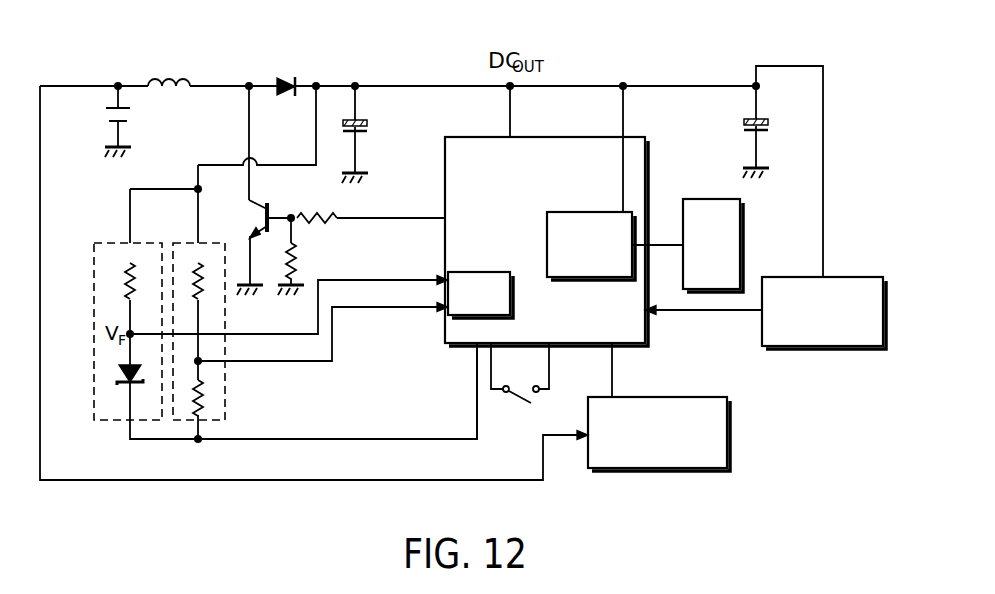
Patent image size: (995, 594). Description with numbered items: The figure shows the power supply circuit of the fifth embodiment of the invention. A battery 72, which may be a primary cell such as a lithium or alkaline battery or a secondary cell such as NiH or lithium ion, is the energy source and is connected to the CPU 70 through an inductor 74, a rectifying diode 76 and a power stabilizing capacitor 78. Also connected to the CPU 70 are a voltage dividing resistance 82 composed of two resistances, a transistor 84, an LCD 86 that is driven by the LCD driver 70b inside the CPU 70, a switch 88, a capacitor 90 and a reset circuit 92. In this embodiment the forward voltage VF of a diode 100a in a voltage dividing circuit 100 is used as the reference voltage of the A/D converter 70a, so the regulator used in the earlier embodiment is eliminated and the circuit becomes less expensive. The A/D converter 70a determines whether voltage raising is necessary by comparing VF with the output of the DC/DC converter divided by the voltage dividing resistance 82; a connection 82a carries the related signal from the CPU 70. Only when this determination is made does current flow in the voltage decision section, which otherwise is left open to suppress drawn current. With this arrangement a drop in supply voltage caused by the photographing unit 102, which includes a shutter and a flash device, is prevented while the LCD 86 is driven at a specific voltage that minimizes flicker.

The CPU 70 is at (445, 167).
The A/D converter 70a is at (513, 305).
The LCD driver 70b is at (574, 212).
The battery 72 is at (102, 120).
The inductor 74 is at (192, 76).
The rectifying diode 76 is at (285, 75).
The power stabilizing capacitor 78 is at (372, 124).
The voltage dividing resistance 82 is at (225, 390).
The detection signal line 82a is at (475, 346).
The transistor 84 is at (270, 196).
The LCD 86 is at (743, 236).
The switch 88 is at (514, 405).
The capacitor 90 is at (742, 125).
The reset circuit 92 is at (840, 277).
The voltage dividing circuit 100 is at (94, 400).
The diode 100a is at (120, 367).
The photographing unit 102 is at (727, 441).